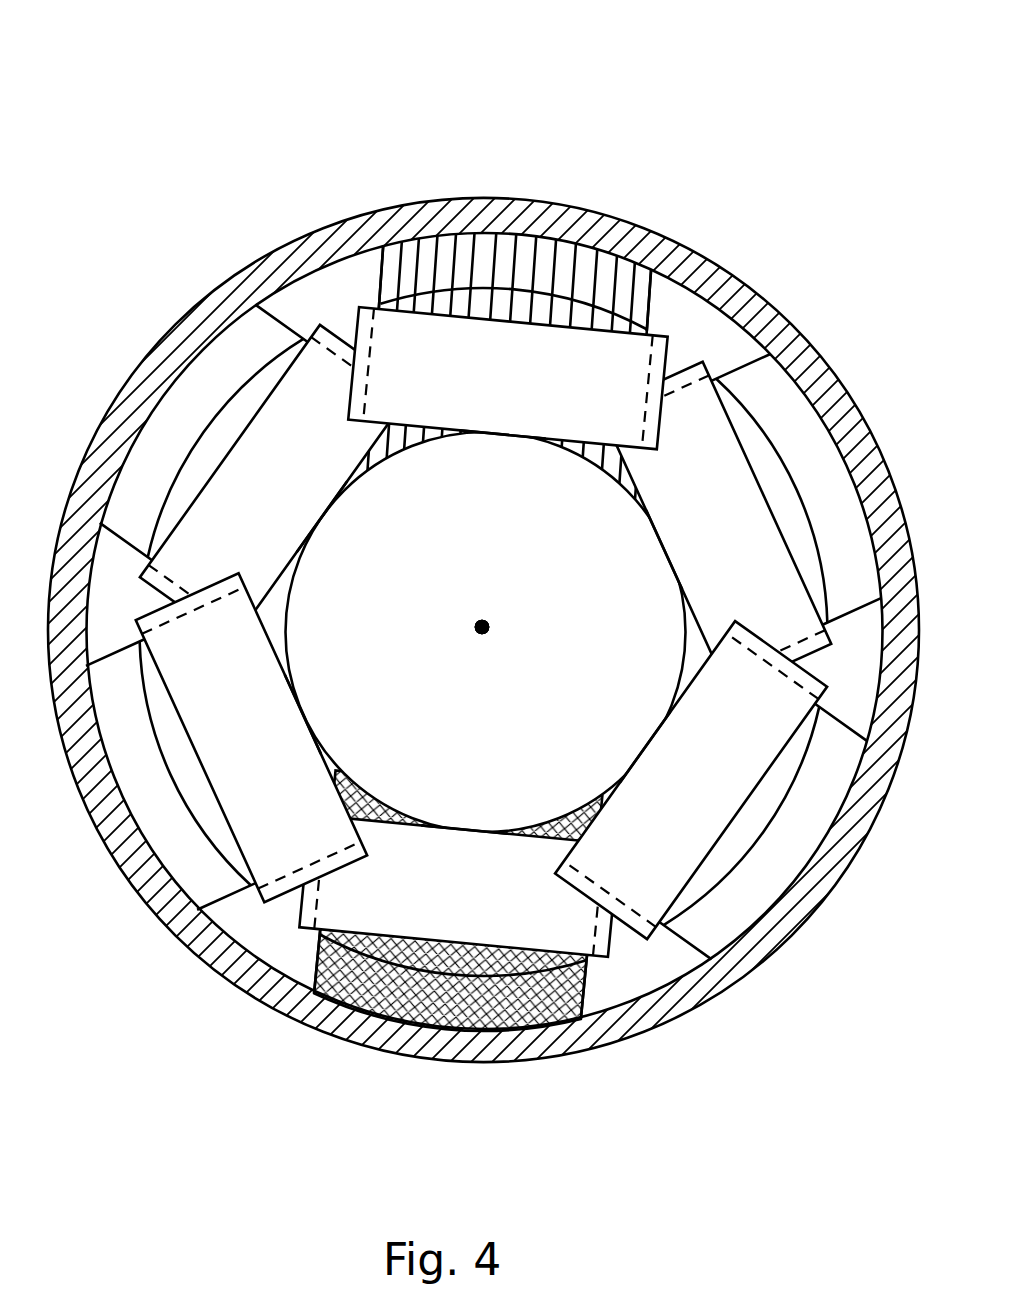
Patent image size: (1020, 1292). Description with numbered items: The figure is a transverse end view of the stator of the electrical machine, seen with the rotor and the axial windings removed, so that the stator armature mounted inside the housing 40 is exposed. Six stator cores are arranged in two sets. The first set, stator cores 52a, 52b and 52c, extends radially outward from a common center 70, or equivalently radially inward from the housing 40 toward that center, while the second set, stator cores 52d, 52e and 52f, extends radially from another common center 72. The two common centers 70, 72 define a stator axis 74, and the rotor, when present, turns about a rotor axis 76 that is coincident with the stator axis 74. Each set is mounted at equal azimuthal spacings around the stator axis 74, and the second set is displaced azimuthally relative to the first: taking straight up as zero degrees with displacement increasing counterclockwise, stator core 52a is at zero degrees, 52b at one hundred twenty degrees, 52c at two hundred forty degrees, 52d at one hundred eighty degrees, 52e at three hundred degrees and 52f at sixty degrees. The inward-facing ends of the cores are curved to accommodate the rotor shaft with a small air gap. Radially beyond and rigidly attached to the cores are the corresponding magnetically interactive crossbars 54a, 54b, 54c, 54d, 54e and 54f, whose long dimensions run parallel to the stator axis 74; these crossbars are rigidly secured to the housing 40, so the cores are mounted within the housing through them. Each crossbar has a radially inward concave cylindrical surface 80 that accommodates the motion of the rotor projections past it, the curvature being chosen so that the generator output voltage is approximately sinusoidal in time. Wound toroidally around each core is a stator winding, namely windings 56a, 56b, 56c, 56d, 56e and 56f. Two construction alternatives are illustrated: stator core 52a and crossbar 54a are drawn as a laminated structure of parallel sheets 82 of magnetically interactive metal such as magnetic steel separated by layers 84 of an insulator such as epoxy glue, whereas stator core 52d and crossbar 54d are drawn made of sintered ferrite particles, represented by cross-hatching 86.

The housing 40 is at (817, 352).
The stator core 52a is at (556, 448).
The stator core 52b is at (614, 782).
The stator core 52c is at (332, 758).
The stator core 52d is at (515, 830).
The stator core 52e is at (297, 562).
The stator core 52f is at (682, 596).
The crossbar 54a is at (380, 277).
The crossbar 54b is at (763, 832).
The crossbar 54c is at (171, 774).
The crossbar 54d is at (584, 992).
The crossbar 54e is at (204, 433).
The crossbar 54f is at (796, 489).
The stator winding 56a is at (507, 378).
The stator winding 56b is at (691, 780).
The stator winding 56c is at (251, 737).
The stator winding 56d is at (458, 886).
The stator winding 56e is at (276, 484).
The stator winding 56f is at (715, 526).
The common center 70 is at (503, 605).
The common center 72 is at (482, 627).
The stator axis 74 is at (482, 627).
The rotor axis 76 is at (482, 627).
The concave cylindrical surface 80 is at (319, 942).
The sheets 82 is at (617, 256).
The layers 84 is at (597, 250).
The cross-hatching 86 is at (531, 1010).